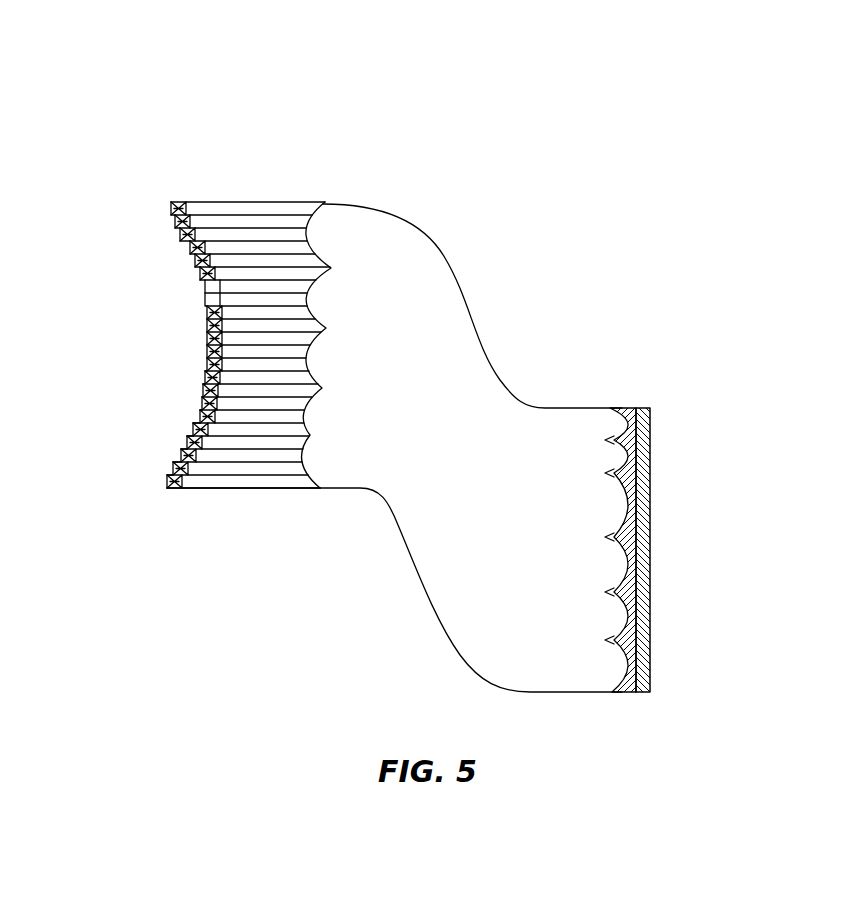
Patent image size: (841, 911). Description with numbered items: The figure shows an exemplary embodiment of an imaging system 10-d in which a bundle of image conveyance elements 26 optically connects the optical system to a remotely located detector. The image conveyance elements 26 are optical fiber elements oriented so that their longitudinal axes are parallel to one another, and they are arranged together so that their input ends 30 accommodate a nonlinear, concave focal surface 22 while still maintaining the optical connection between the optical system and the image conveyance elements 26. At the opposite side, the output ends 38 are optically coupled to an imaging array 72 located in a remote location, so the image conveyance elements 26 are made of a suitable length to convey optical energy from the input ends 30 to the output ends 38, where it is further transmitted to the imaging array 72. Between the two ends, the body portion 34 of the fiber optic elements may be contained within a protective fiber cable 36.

The imaging system 10-d is at (630, 96).
The concave focal surface 22 is at (160, 244).
The image conveyance elements 26 is at (302, 196).
The input ends 30 is at (198, 196).
The body portion 34 is at (452, 258).
The protective fiber cable 36 is at (445, 637).
The output ends 38 is at (629, 391).
The imaging array 72 is at (650, 445).